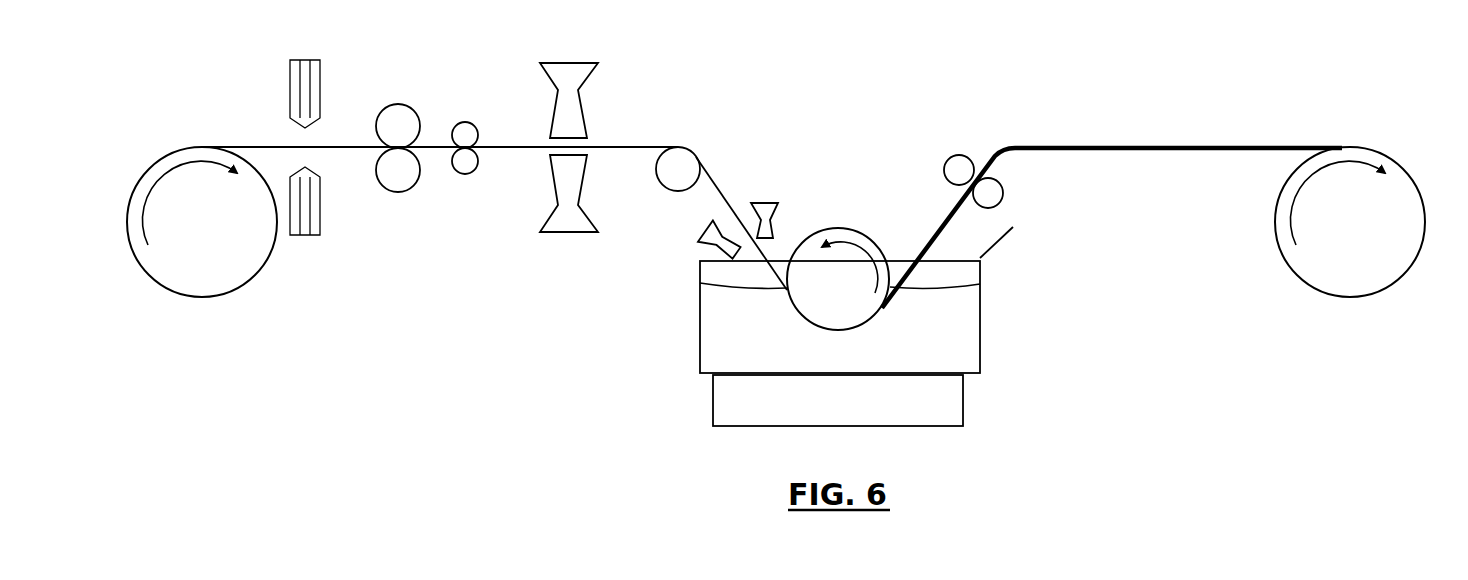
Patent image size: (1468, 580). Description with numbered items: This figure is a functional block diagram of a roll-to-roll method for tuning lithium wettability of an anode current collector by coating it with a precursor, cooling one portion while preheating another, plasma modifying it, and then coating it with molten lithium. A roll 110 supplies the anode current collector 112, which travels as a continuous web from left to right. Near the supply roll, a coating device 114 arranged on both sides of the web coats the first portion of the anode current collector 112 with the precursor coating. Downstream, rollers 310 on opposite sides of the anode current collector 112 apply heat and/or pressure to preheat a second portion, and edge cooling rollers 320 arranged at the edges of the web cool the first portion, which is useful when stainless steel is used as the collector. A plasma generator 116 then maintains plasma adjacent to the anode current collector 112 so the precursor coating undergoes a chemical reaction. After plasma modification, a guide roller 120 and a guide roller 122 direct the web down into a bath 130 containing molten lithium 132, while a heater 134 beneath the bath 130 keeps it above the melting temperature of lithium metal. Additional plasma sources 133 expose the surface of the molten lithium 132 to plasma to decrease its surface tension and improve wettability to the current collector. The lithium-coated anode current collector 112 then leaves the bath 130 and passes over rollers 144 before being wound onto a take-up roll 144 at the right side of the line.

The roll 110 is at (162, 287).
The anode current collector 112 is at (250, 147).
The coating device 114 is at (289, 81).
The plasma generator 116 is at (572, 63).
The guide roller 120 is at (672, 191).
The guide roller 122 is at (840, 228).
The bath 130 is at (698, 350).
The molten lithium 132 is at (712, 302).
The additional plasma source 133 is at (753, 203).
The heater 134 is at (712, 405).
The rollers / take-up roll 144 is at (1004, 195).
The rollers 310 is at (397, 104).
The edge cooling rollers 320 is at (463, 122).